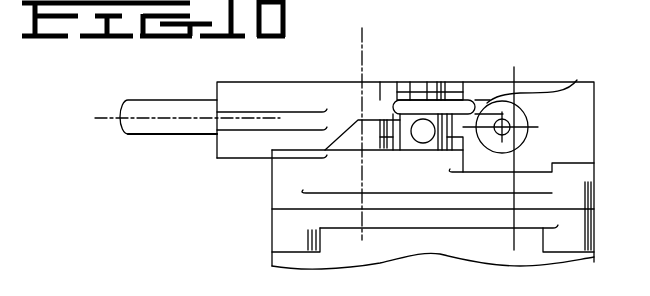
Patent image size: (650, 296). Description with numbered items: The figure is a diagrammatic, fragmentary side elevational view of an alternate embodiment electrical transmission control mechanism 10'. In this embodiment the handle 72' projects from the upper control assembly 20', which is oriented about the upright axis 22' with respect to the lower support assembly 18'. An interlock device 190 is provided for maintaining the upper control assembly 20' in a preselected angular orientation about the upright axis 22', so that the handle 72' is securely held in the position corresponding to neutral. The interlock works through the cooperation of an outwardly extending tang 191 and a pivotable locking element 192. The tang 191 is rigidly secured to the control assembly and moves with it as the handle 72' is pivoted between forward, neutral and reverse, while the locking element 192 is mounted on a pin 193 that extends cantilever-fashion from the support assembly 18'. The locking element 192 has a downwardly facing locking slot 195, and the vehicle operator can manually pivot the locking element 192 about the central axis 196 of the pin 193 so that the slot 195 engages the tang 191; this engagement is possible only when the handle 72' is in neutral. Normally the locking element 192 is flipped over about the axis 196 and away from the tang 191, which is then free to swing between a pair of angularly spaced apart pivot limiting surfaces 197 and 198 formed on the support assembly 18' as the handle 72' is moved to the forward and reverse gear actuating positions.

The electrical transmission control mechanism 10' is at (337, 247).
The lower support assembly 18' is at (383, 168).
The upper control assembly 20' is at (363, 172).
The upright axis 22' is at (321, 134).
The handle 72' is at (187, 98).
The interlock device 190 is at (446, 96).
The tang 191 is at (423, 144).
The locking element 192 is at (577, 80).
The pin 193 is at (525, 138).
The locking slot 195 is at (421, 102).
The central axis 196 is at (512, 101).
The pivot limiting surface 197 is at (397, 114).
The pivot limiting surface 198 is at (463, 90).